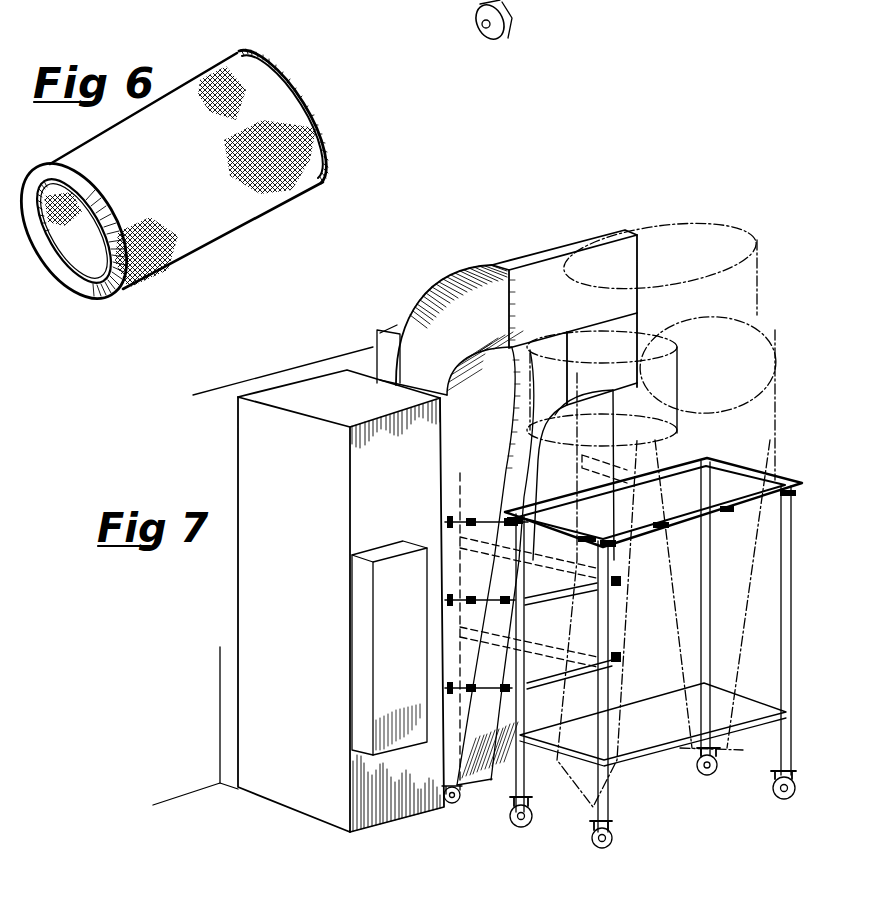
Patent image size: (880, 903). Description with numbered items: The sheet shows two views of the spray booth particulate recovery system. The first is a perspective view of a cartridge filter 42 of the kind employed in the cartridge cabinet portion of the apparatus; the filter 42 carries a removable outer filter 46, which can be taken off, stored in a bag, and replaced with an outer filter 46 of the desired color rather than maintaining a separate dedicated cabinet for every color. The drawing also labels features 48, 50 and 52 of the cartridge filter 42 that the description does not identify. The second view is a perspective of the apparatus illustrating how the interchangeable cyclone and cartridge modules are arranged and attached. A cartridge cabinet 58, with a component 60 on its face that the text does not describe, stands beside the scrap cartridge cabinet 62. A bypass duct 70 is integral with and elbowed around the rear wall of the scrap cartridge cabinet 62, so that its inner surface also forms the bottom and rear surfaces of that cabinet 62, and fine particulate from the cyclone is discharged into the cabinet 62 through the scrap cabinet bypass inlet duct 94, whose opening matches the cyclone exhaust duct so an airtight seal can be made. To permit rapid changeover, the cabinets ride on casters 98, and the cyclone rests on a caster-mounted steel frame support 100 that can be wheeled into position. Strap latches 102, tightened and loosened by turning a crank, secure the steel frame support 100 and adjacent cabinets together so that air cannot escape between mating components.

In FIG. 6, the cartridge filter 42 is at (192, 78).
In FIG. 6, the outer filter 46 is at (170, 157).
In FIG. 6, the end cap rim 48 is at (320, 97).
In FIG. 6, the front end ring 50 is at (88, 290).
In FIG. 6, the central opening 52 is at (90, 249).
In FIG. 7, the cartridge cabinet 58 is at (279, 786).
In FIG. 7, the control box 60 is at (386, 692).
In FIG. 7, the scrap cartridge cabinet 62 is at (440, 421).
In FIG. 7, the bypass duct 70 is at (600, 333).
In FIG. 7, the scrap cabinet bypass inlet duct 94 is at (553, 270).
In FIG. 7, the casters 98 is at (460, 804).
In FIG. 7, the steel frame support 100 is at (788, 612).
In FIG. 7, the strap latches 102 is at (447, 688).